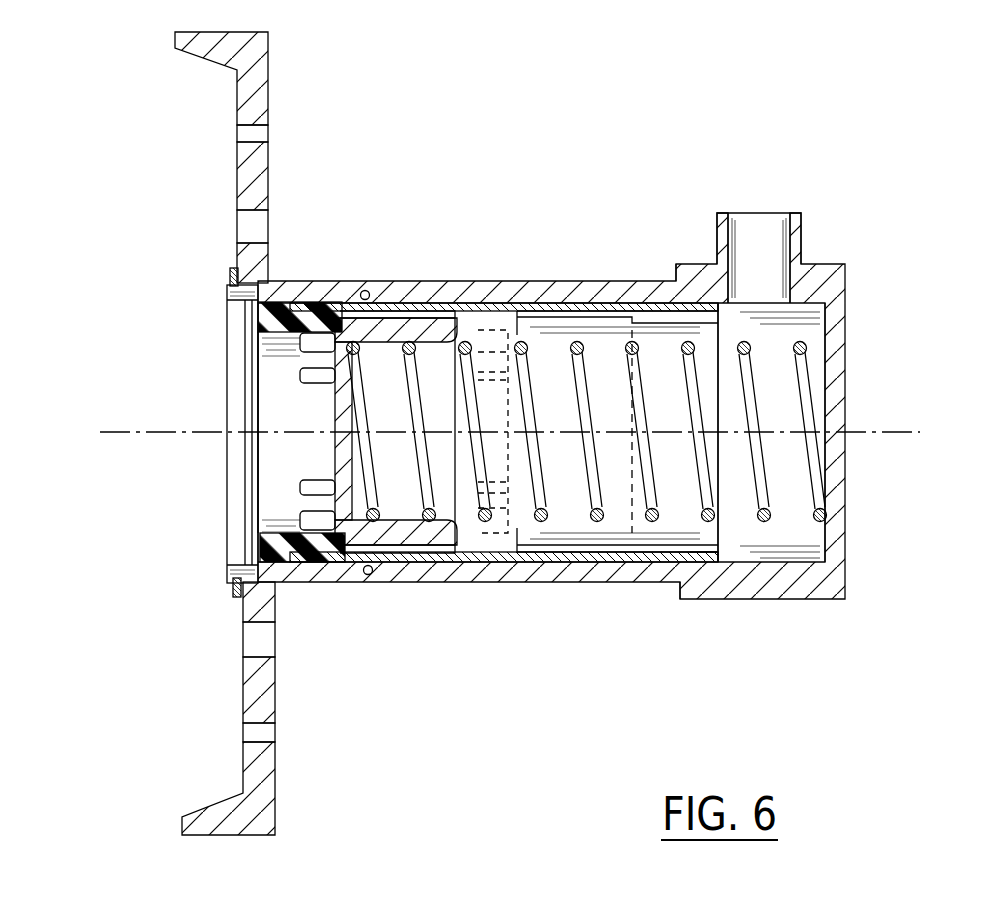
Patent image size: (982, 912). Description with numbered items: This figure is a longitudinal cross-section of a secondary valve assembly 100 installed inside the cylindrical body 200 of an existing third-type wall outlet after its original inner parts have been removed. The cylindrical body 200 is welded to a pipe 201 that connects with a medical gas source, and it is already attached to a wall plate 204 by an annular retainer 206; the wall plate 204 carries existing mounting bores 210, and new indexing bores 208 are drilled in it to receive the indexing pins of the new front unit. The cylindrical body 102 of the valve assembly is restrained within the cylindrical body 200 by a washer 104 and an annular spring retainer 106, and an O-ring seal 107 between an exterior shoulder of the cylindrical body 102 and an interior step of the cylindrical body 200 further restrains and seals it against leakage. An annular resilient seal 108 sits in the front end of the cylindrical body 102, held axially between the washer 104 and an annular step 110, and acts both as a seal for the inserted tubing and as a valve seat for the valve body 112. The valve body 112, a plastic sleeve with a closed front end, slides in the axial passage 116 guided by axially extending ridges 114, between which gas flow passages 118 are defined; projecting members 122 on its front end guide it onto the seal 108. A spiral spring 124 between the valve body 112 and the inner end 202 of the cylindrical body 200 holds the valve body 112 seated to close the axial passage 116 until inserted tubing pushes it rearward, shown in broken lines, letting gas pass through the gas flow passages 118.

The secondary valve assembly 100 is at (512, 297).
The cylindrical body 102 is at (440, 300).
The washer 104 is at (248, 285).
The annular spring retainer 106 is at (240, 273).
The O-ring seal 107 is at (365, 290).
The annular resilient seal 108 is at (297, 560).
The annular step 110 is at (362, 566).
The valve body 112 is at (433, 555).
The axially extending ridges 114 is at (455, 555).
The axial passage 116 is at (598, 553).
The gas flow passages 118 is at (402, 552).
The projecting members 122 is at (322, 558).
The spiral spring 124 is at (707, 553).
The cylindrical body 200 is at (603, 280).
The pipe 201 is at (801, 220).
The inner end 202 is at (820, 378).
The wall plate 204 is at (245, 90).
The annular retainer 206 is at (235, 582).
The indexing bores 208 is at (260, 222).
The mounting bores 210 is at (262, 135).